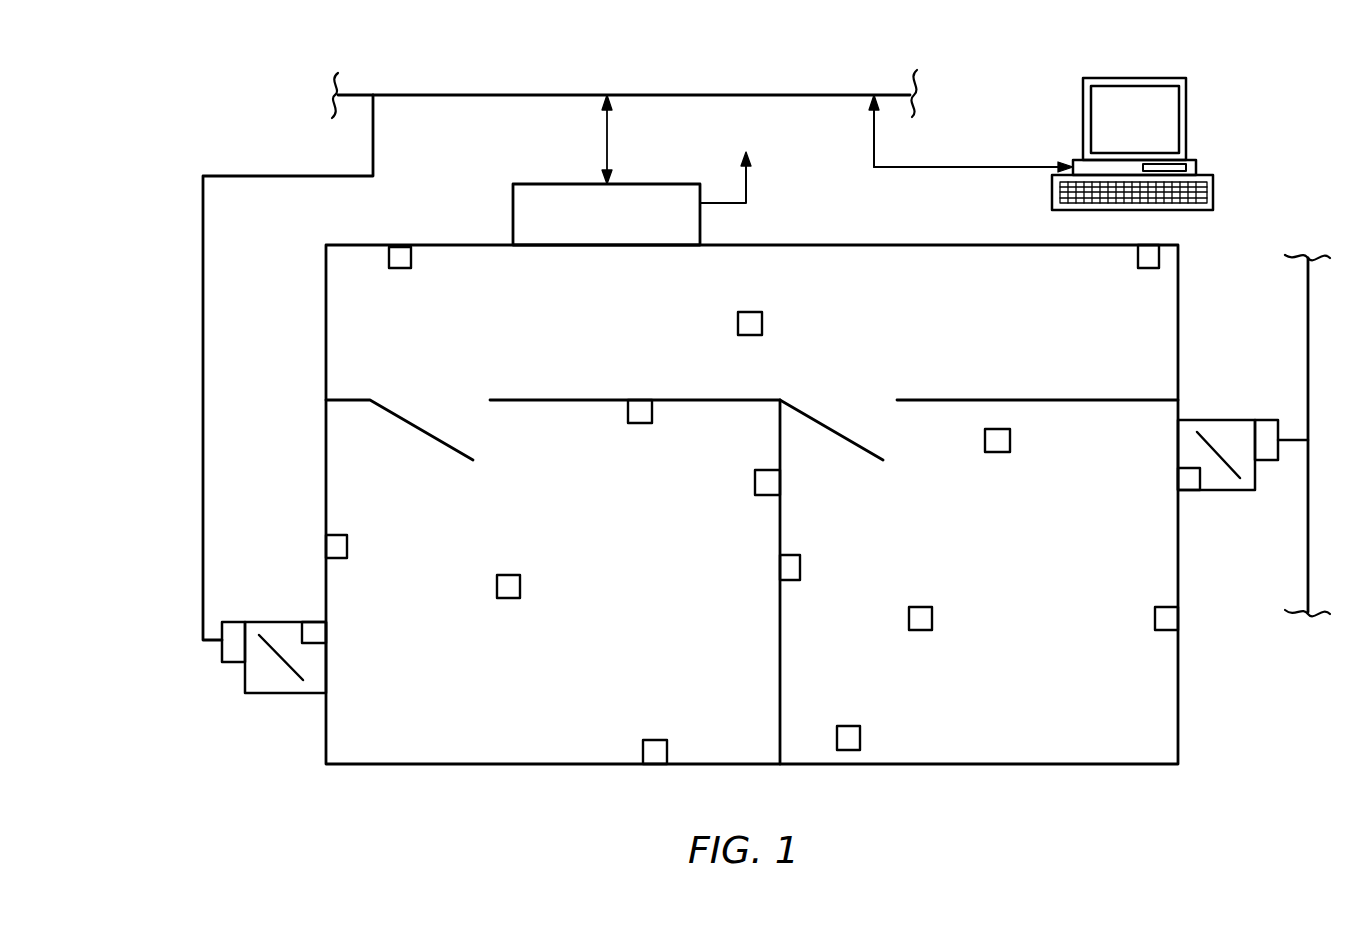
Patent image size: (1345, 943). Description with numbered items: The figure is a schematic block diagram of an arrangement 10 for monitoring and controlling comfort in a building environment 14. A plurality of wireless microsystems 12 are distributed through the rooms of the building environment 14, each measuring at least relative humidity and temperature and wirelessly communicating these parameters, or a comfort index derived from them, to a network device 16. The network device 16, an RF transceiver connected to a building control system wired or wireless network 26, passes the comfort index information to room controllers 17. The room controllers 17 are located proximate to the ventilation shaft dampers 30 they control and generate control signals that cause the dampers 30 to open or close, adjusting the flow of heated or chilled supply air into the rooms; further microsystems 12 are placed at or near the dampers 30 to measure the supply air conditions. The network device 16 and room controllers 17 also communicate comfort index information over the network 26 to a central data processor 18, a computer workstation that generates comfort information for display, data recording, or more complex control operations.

The arrangement 10 is at (255, 111).
The wireless microsystem 12 is at (411, 247).
The building environment 14 is at (315, 347).
The network device 16 is at (632, 170).
The room controller 17 is at (222, 662).
The central data processor 18 is at (1073, 160).
The building control system network 26 is at (790, 98).
The ventilation shaft damper 30 is at (245, 693).